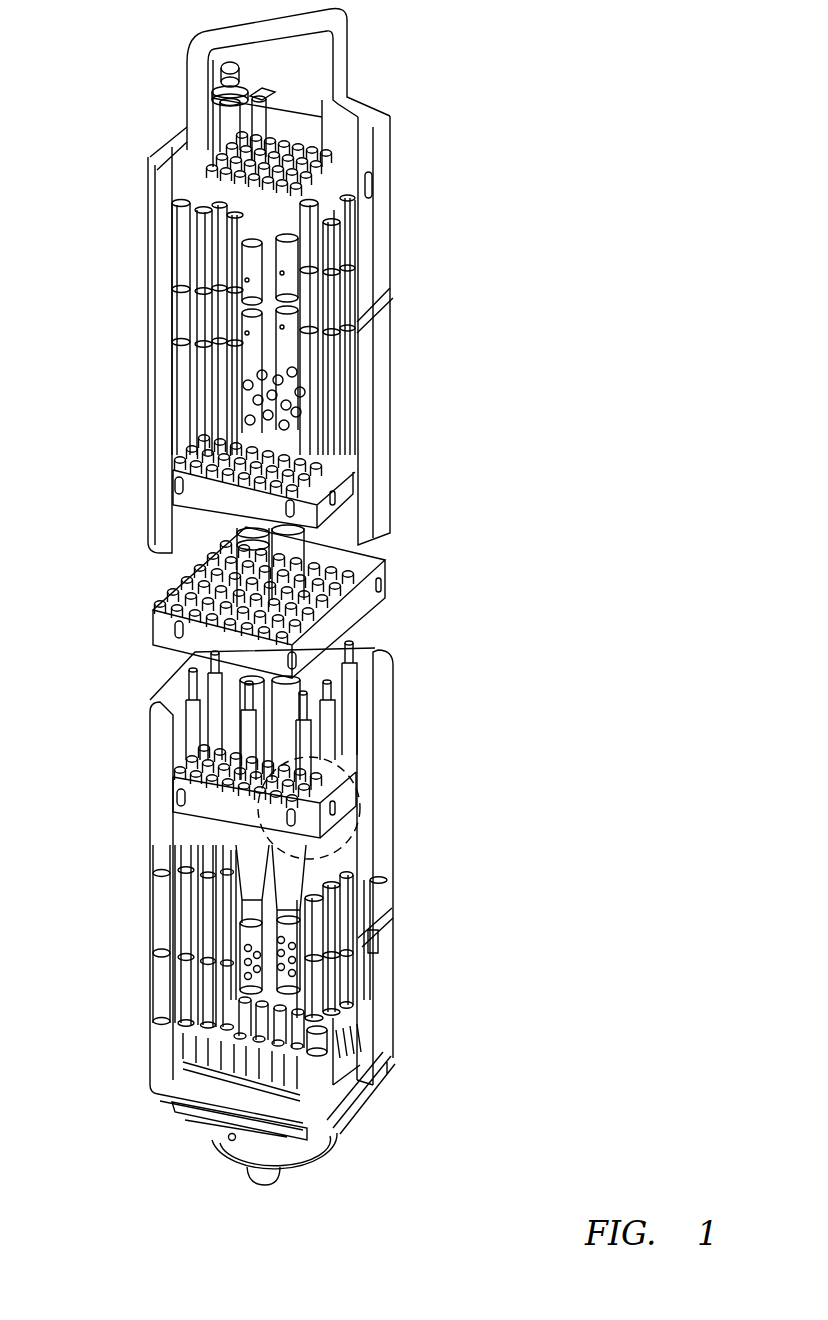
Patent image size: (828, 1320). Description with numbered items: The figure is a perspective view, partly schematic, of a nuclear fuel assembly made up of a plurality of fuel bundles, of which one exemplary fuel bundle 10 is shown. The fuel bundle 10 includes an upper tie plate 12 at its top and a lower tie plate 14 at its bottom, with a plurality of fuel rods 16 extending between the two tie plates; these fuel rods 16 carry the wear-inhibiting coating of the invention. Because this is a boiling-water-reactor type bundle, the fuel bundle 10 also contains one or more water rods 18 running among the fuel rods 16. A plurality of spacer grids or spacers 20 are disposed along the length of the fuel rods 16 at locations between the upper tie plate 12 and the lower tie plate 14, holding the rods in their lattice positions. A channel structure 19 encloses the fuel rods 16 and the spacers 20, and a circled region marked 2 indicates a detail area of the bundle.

The fuel bundle 10 is at (122, 490).
The upper tie plate 12 is at (347, 74).
The lower tie plate 14 is at (362, 1113).
The fuel rods 16 is at (350, 413).
The water rods 18 is at (293, 553).
The channel structure 19 is at (370, 187).
The spacer grids 20 is at (362, 610).
The detail region shown in FIG. 2 is at (340, 872).